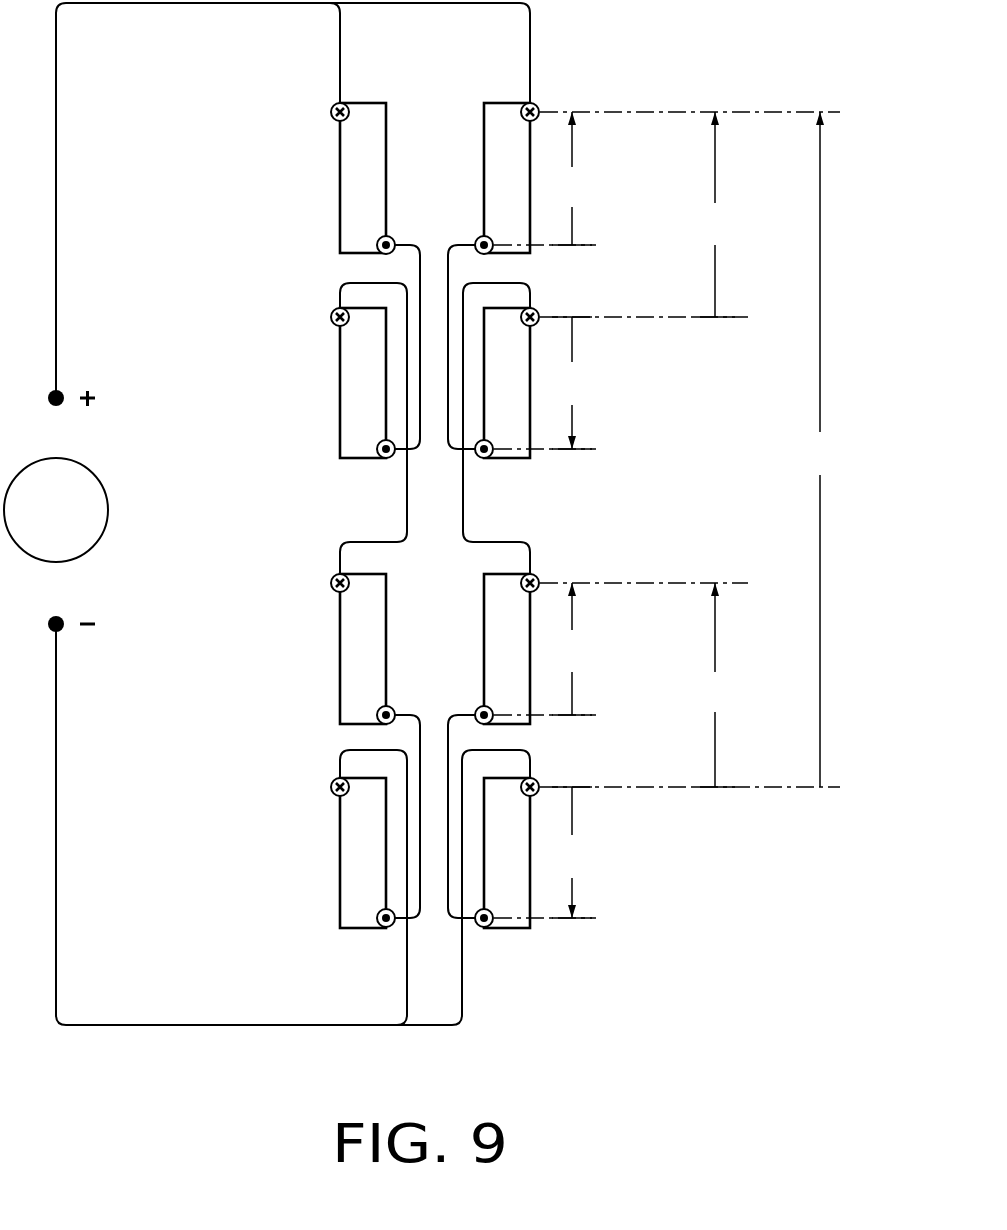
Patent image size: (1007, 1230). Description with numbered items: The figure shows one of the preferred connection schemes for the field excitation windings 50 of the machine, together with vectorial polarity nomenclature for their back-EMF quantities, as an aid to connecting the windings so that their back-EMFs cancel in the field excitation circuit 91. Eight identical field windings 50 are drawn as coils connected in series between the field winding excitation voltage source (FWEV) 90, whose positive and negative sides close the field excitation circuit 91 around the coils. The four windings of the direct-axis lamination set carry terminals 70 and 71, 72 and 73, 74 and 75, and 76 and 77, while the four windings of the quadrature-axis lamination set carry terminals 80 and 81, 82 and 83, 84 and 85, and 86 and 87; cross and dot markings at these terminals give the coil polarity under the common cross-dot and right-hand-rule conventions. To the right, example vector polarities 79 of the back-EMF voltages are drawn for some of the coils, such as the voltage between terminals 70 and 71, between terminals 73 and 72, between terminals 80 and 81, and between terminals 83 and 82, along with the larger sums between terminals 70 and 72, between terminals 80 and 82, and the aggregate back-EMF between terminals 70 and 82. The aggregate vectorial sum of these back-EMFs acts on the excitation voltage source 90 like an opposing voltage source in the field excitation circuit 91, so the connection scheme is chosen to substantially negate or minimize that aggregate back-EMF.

The field excitation winding 50 is at (379, 192).
The field winding terminal 70 is at (539, 106).
The field winding terminal 71 is at (477, 238).
The field winding terminal 72 is at (539, 311).
The field winding terminal 73 is at (492, 460).
The field winding terminal 74 is at (332, 107).
The field winding terminal 75 is at (378, 250).
The field winding terminal 76 is at (332, 320).
The field winding terminal 77 is at (378, 459).
The vector polarities 79 is at (582, 901).
The field winding terminal 80 is at (538, 576).
The field winding terminal 81 is at (476, 708).
The field winding terminal 82 is at (539, 783).
The field winding terminal 83 is at (490, 928).
The field winding terminal 84 is at (332, 578).
The field winding terminal 85 is at (378, 712).
The field winding terminal 86 is at (332, 782).
The field winding terminal 87 is at (378, 916).
The field winding excitation voltage source (FWEV) 90 is at (108, 485).
The field excitation circuit 91 is at (62, 247).